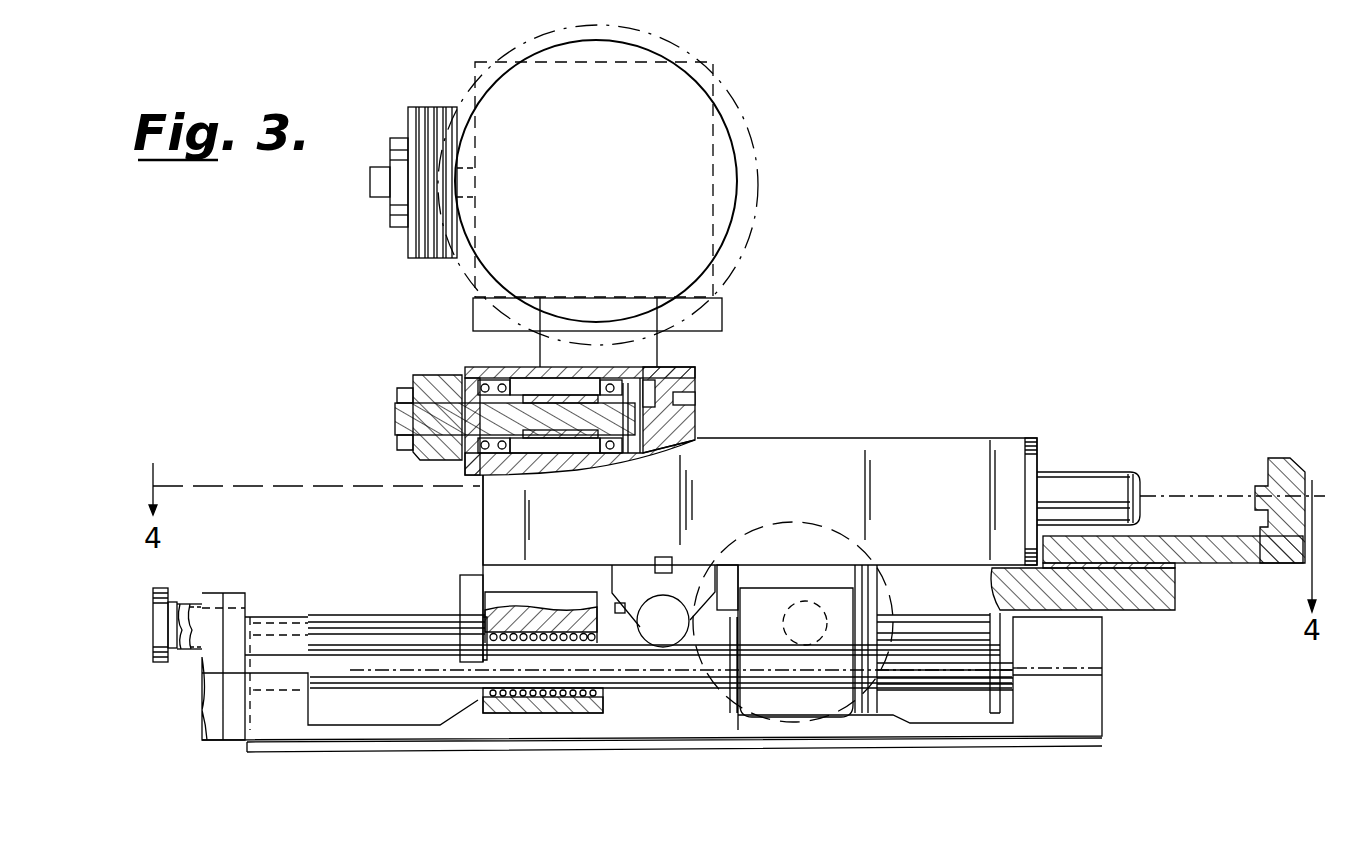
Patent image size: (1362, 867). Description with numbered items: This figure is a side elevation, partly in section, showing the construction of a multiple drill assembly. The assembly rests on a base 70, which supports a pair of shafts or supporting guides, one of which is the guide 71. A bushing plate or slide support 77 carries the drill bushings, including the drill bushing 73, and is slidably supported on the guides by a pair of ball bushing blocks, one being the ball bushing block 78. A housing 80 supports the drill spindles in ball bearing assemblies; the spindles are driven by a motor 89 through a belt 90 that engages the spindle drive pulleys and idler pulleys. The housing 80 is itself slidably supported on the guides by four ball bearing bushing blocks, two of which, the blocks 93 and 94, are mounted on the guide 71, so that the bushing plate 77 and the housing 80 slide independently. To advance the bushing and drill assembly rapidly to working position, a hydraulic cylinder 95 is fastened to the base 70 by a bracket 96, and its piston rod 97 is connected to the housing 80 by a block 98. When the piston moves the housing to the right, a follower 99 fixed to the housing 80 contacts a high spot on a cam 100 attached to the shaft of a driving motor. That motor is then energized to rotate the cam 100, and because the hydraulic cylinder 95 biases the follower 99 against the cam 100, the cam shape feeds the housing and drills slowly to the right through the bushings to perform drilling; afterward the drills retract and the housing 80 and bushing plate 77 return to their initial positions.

The base 70 is at (1063, 703).
The supporting guide 71 is at (400, 684).
The drill bushing 73 is at (1292, 470).
The bushing plate 77 is at (1150, 600).
The ball bushing block 78 is at (950, 668).
The housing 80 is at (843, 455).
The motor 89 is at (735, 212).
The belt 90 is at (415, 456).
The ball bearing bushing block 93 is at (540, 716).
The ball bearing bushing block 94 is at (718, 707).
The hydraulic cylinder 95 is at (160, 588).
The bracket 96 is at (232, 595).
The piston rod 97 is at (396, 620).
The block 98 is at (466, 576).
The follower 99 is at (645, 607).
The cam 100 is at (800, 525).